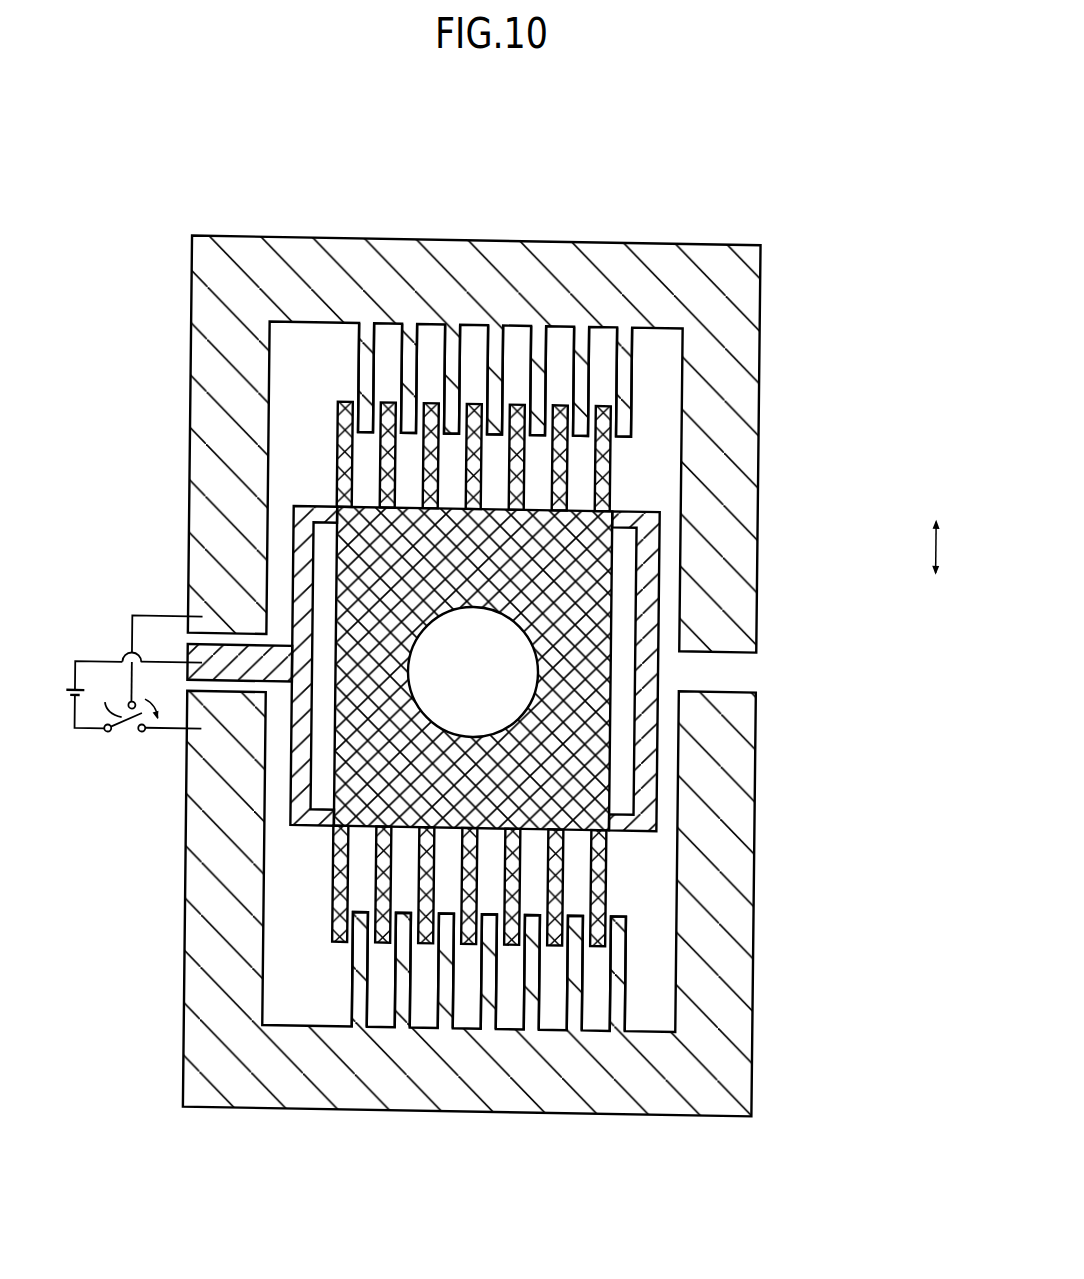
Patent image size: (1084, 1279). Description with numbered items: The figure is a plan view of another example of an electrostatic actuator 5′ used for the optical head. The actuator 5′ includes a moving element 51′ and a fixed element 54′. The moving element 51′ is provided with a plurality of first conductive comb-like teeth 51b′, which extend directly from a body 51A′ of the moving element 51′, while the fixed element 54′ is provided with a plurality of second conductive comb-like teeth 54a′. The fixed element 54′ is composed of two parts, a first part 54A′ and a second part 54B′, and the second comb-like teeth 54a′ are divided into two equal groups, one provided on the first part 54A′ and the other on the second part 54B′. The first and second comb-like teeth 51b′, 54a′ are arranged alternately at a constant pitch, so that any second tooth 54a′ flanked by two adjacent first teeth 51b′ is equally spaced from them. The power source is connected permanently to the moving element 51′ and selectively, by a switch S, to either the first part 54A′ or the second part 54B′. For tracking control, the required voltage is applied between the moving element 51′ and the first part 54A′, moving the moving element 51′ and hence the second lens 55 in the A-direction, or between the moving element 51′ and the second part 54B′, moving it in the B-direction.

The electrostatic actuator 5′ is at (653, 237).
The moving element 51′ is at (622, 569).
The body of the moving element 51A′ is at (586, 758).
The first conductive comb-like teeth 51b′ is at (376, 488).
The fixed element 54′ is at (870, 593).
The first part of the fixed element 54A′ is at (759, 618).
The second part of the fixed element 54B′ is at (758, 698).
The second conductive comb-like teeth 54a′ is at (399, 385).
The second lens 55 is at (437, 673).
The switch S is at (134, 673).